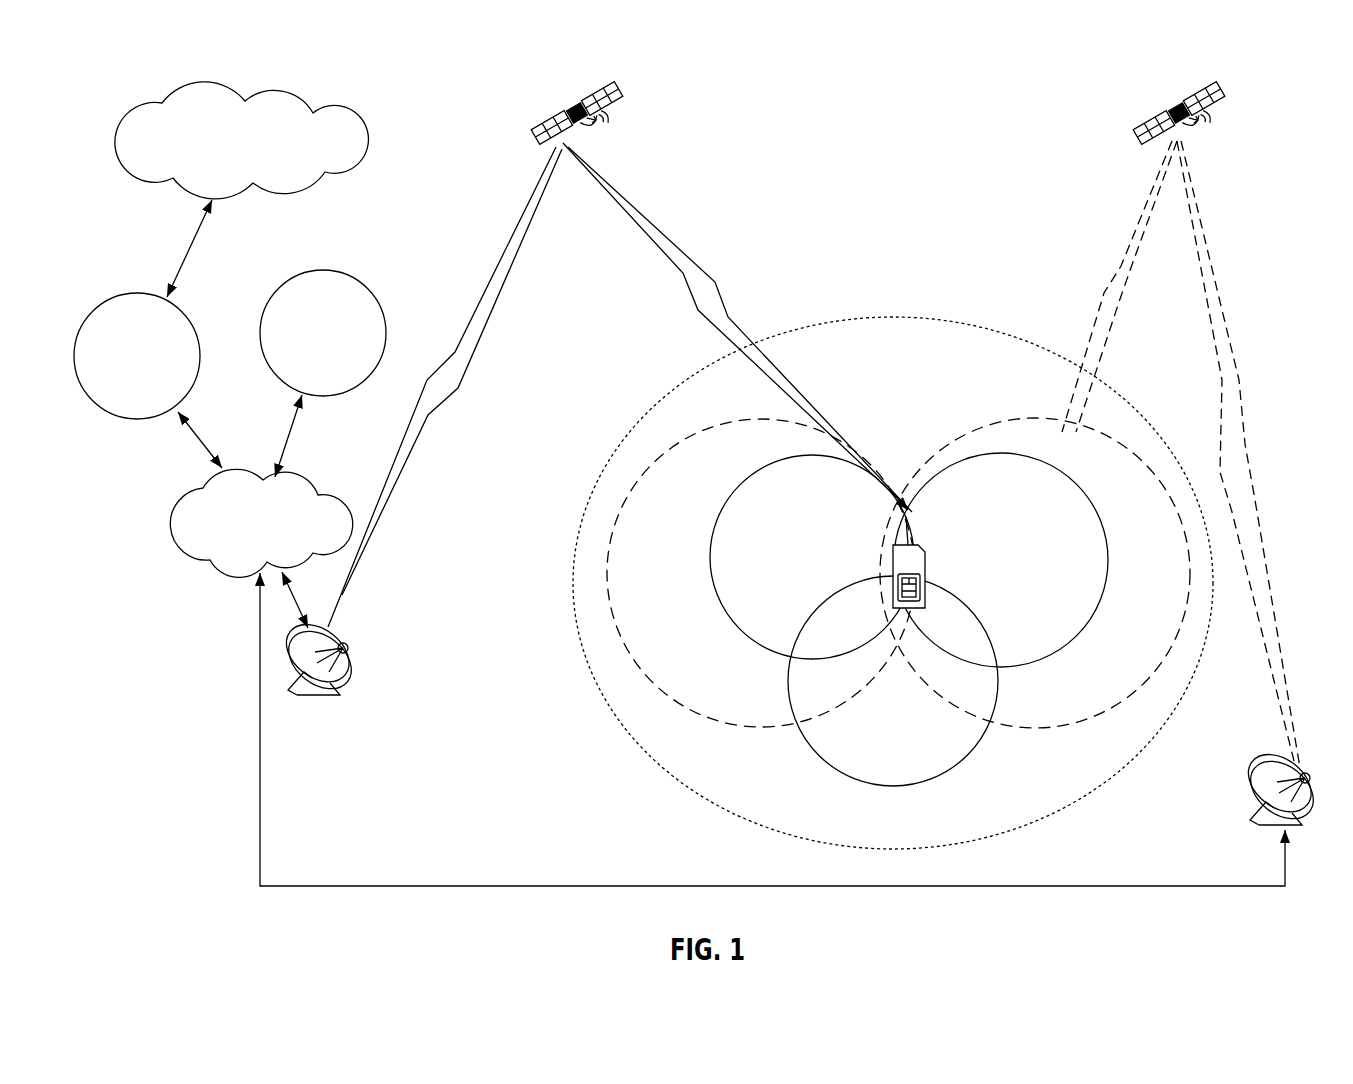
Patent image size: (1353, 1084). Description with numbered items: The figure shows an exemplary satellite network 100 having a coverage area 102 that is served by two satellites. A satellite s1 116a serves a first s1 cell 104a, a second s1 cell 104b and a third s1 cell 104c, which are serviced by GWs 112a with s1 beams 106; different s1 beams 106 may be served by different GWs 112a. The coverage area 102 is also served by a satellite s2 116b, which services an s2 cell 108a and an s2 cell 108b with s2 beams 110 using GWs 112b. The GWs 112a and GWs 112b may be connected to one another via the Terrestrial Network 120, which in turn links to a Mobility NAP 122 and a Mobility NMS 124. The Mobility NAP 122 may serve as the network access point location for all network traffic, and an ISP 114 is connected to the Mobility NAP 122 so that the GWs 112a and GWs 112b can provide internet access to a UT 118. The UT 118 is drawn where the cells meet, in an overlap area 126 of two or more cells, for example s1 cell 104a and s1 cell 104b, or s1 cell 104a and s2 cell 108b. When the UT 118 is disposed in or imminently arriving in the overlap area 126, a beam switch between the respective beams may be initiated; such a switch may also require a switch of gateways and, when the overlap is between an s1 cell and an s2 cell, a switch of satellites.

The satellite network 100 is at (1252, 120).
The coverage area 102 is at (893, 317).
The s1 cell 104a is at (712, 560).
The s1 cell 104b is at (800, 728).
The s1 cell 104c is at (1050, 658).
The s1 beams 106 is at (725, 297).
The s2 cell 108a is at (630, 493).
The s2 cell 108b is at (1117, 440).
The s2 beams 110 is at (1103, 292).
The GWs 112a is at (362, 738).
The GWs 112b is at (1325, 869).
The ISP 114 is at (275, 161).
The satellite s1 116a is at (594, 67).
The satellite s2 116b is at (1196, 67).
The UT 118 is at (927, 560).
The Terrestrial Network 120 is at (313, 550).
The Mobility NAP 122 is at (172, 389).
The Mobility NMS 124 is at (362, 364).
The overlap area 126 is at (910, 505).